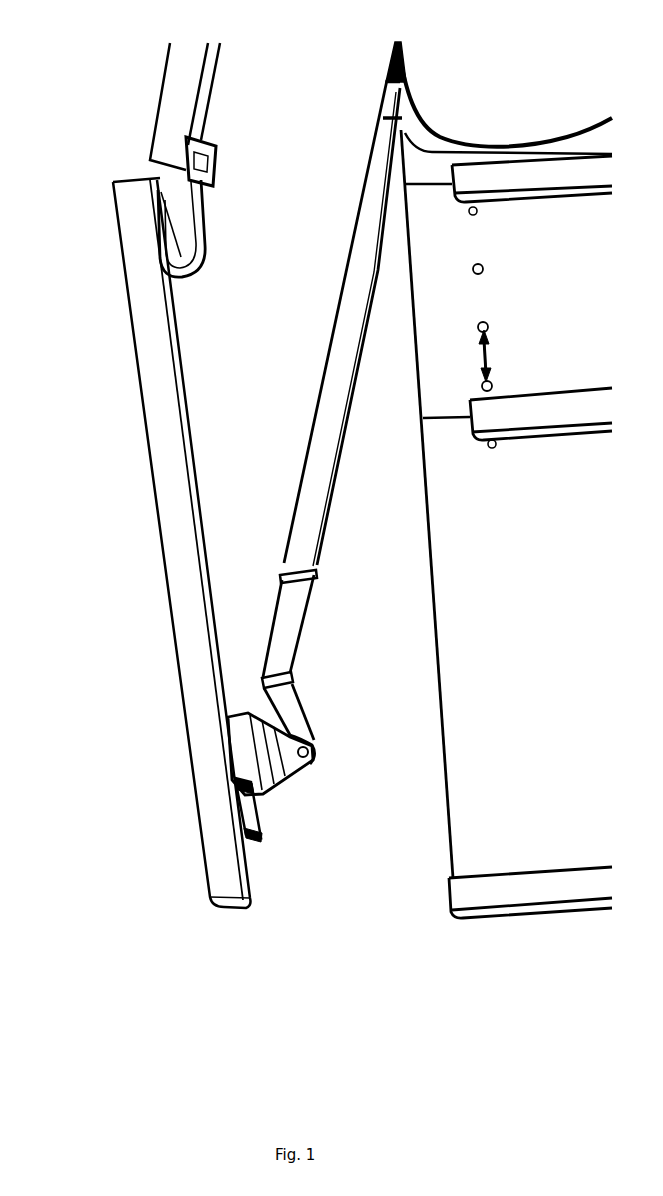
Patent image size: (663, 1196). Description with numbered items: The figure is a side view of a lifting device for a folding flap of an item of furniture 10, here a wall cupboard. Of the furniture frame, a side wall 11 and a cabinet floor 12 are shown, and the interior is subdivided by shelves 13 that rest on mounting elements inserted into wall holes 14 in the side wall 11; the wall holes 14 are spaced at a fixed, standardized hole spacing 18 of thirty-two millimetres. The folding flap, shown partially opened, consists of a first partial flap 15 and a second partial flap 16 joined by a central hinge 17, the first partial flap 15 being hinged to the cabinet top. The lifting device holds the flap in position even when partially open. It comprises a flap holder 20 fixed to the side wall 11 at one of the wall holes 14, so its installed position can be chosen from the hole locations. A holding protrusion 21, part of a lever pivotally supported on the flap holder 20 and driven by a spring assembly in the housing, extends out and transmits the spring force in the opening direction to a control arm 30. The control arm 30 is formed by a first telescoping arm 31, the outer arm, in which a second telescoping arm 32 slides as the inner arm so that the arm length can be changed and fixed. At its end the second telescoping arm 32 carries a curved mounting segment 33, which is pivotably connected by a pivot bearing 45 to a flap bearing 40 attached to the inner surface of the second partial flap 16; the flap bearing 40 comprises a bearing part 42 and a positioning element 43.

The item of furniture 10 is at (563, 982).
The side wall 11 is at (470, 833).
The cabinet floor 12 is at (460, 897).
The shelves 13 is at (548, 177).
The wall holes 14 is at (483, 271).
The first partial flap 15 is at (175, 97).
The second partial flap 16 is at (172, 530).
The central hinge 17 is at (201, 206).
The hole spacing 18 is at (492, 347).
The flap holder 20 is at (507, 90).
The holding protrusion 21 is at (394, 73).
The control arm 30 is at (297, 305).
The first telescoping arm 31 is at (382, 165).
The second telescoping arm 32 is at (283, 623).
The mounting segment 33 is at (290, 708).
The flap bearing 40 is at (318, 820).
The bearing part 42 is at (297, 770).
The positioning element 43 is at (253, 842).
The pivot bearing 45 is at (312, 748).